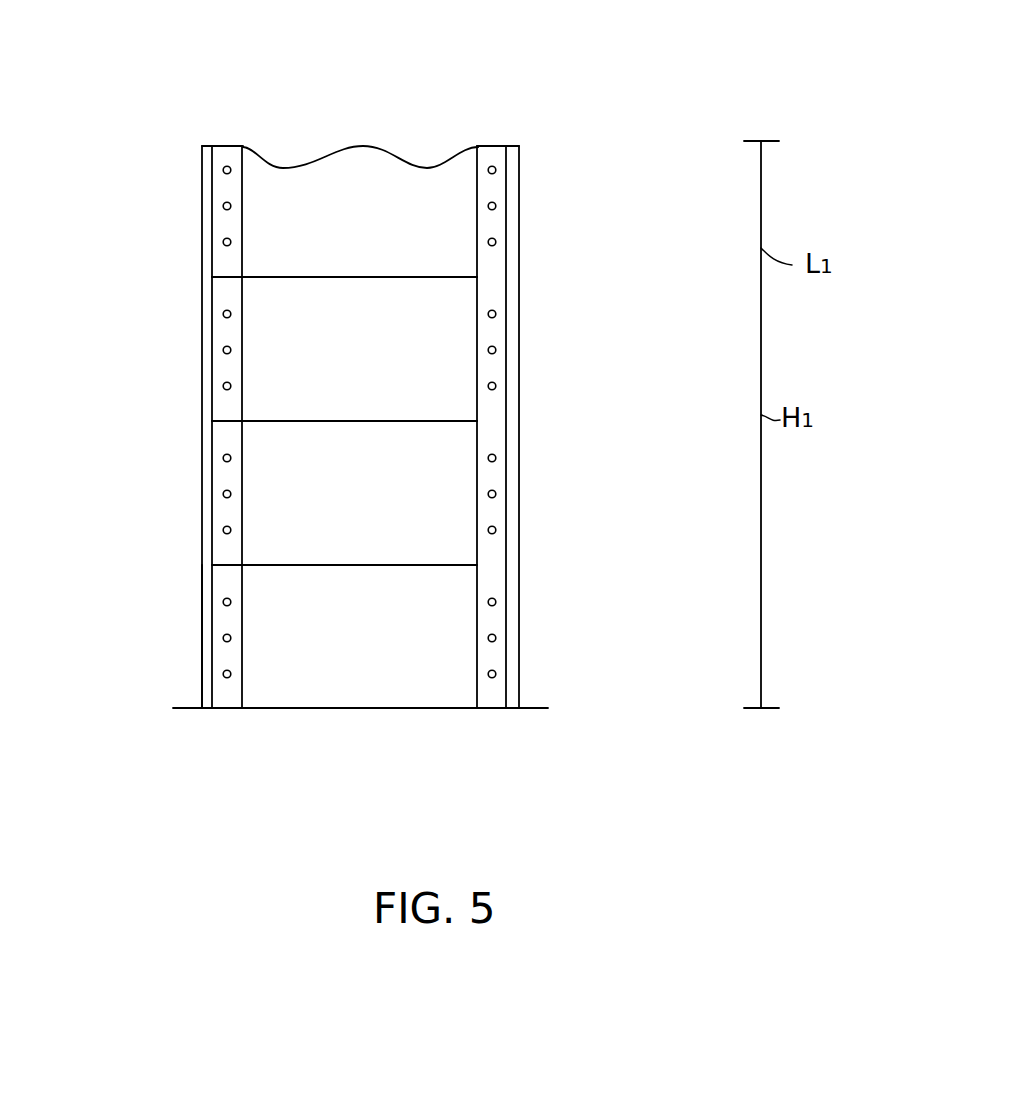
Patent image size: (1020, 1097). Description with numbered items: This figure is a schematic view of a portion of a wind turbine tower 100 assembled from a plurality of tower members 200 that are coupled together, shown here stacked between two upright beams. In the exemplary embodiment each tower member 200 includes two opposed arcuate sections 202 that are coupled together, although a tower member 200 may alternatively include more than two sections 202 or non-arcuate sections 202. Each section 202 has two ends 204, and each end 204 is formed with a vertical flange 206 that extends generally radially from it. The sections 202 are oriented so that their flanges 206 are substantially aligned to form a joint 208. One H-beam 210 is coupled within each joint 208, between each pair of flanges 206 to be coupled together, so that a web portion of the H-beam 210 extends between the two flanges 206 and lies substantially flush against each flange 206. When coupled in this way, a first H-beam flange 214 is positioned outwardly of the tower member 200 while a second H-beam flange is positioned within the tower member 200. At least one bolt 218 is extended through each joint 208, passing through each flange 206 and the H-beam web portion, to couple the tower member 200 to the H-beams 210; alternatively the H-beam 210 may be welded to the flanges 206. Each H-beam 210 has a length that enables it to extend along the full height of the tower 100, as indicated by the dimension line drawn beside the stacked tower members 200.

The tower 100 is at (562, 58).
The tower member 200 is at (438, 206).
The arcuate section 202 is at (390, 245).
The end 204 is at (490, 331).
The vertical flange 206 is at (493, 368).
The joint 208 is at (200, 231).
The H-beam 210 is at (163, 488).
The first H-beam flange 214 is at (205, 638).
The bolt 218 is at (224, 388).